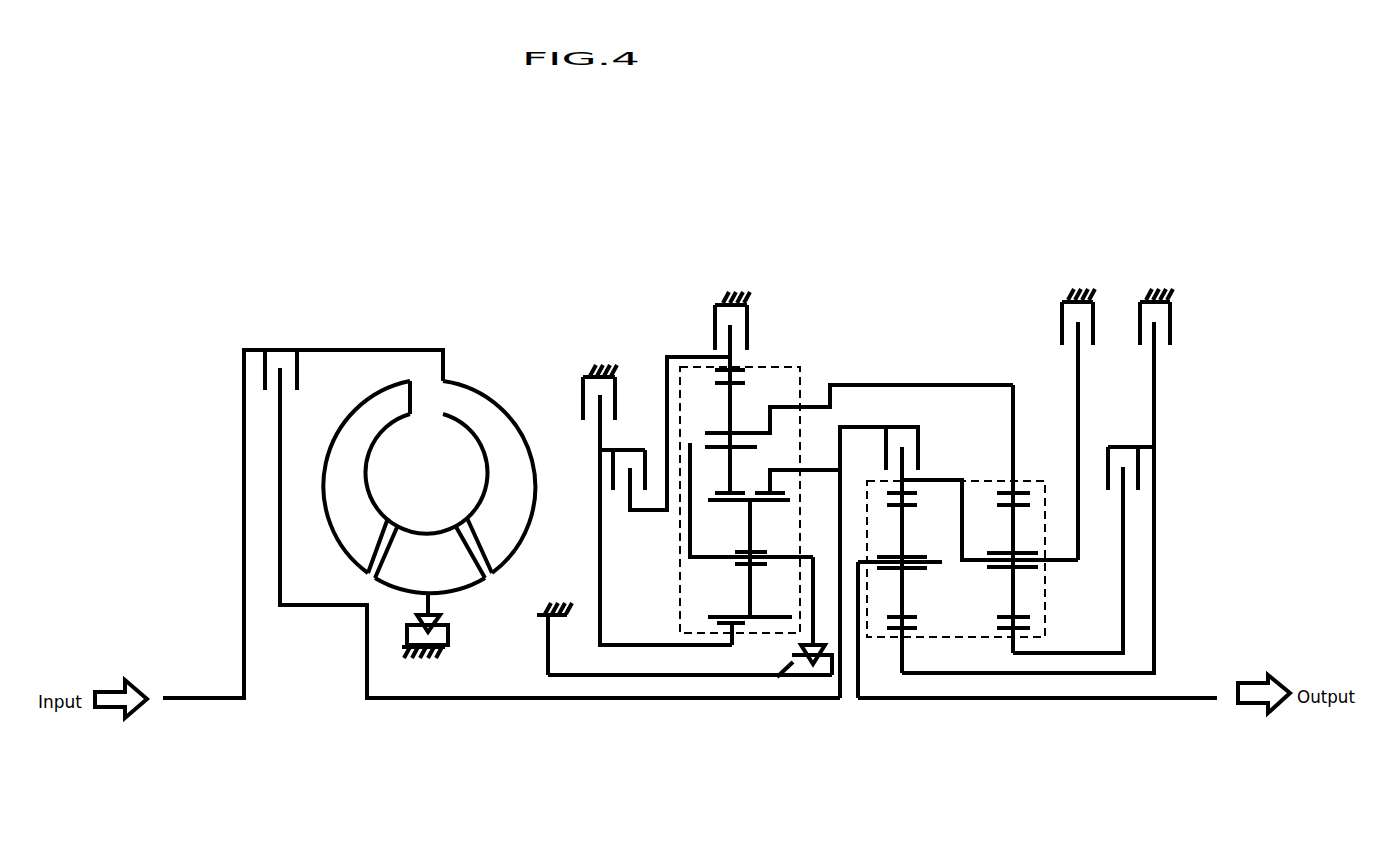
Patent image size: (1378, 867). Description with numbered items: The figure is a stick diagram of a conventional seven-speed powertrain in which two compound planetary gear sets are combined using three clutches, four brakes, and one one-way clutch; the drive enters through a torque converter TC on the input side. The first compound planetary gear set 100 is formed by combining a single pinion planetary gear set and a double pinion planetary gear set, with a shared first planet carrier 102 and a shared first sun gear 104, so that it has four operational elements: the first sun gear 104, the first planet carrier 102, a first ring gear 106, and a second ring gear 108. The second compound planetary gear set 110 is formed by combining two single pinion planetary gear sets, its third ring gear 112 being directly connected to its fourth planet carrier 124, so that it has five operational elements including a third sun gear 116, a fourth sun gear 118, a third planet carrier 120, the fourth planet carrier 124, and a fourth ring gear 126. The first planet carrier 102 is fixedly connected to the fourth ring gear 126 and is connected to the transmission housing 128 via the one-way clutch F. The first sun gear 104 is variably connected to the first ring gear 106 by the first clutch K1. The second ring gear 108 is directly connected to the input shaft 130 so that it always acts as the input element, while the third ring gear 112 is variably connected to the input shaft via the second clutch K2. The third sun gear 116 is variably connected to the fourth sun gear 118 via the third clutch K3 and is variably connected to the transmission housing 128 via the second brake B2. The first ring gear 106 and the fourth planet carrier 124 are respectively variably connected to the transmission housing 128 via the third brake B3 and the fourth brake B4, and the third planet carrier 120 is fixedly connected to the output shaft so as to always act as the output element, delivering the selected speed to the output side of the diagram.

The first compound planetary gear set 100 is at (681, 617).
The first planet carrier 102 is at (692, 527).
The first sun gear 104 is at (740, 623).
The first ring gear 106 is at (743, 368).
The second ring gear 108 is at (757, 491).
The second compound planetary gear set 110 is at (968, 636).
The third ring gear 112 is at (908, 492).
The third sun gear 116 is at (908, 635).
The fourth sun gear 118 is at (1020, 633).
The third planet carrier 120 is at (857, 640).
The fourth planet carrier 124 is at (1073, 568).
The fourth ring gear 126 is at (1012, 492).
The transmission housing 128 is at (598, 366).
The input shaft 130 is at (710, 697).
The torque converter TC is at (478, 380).
The first clutch K1 is at (666, 433).
The second clutch K2 is at (918, 550).
The third clutch K3 is at (1131, 456).
The second brake B2 is at (1144, 317).
The third brake B3 is at (719, 392).
The fourth brake B4 is at (1066, 317).
The one-way clutch F is at (788, 668).